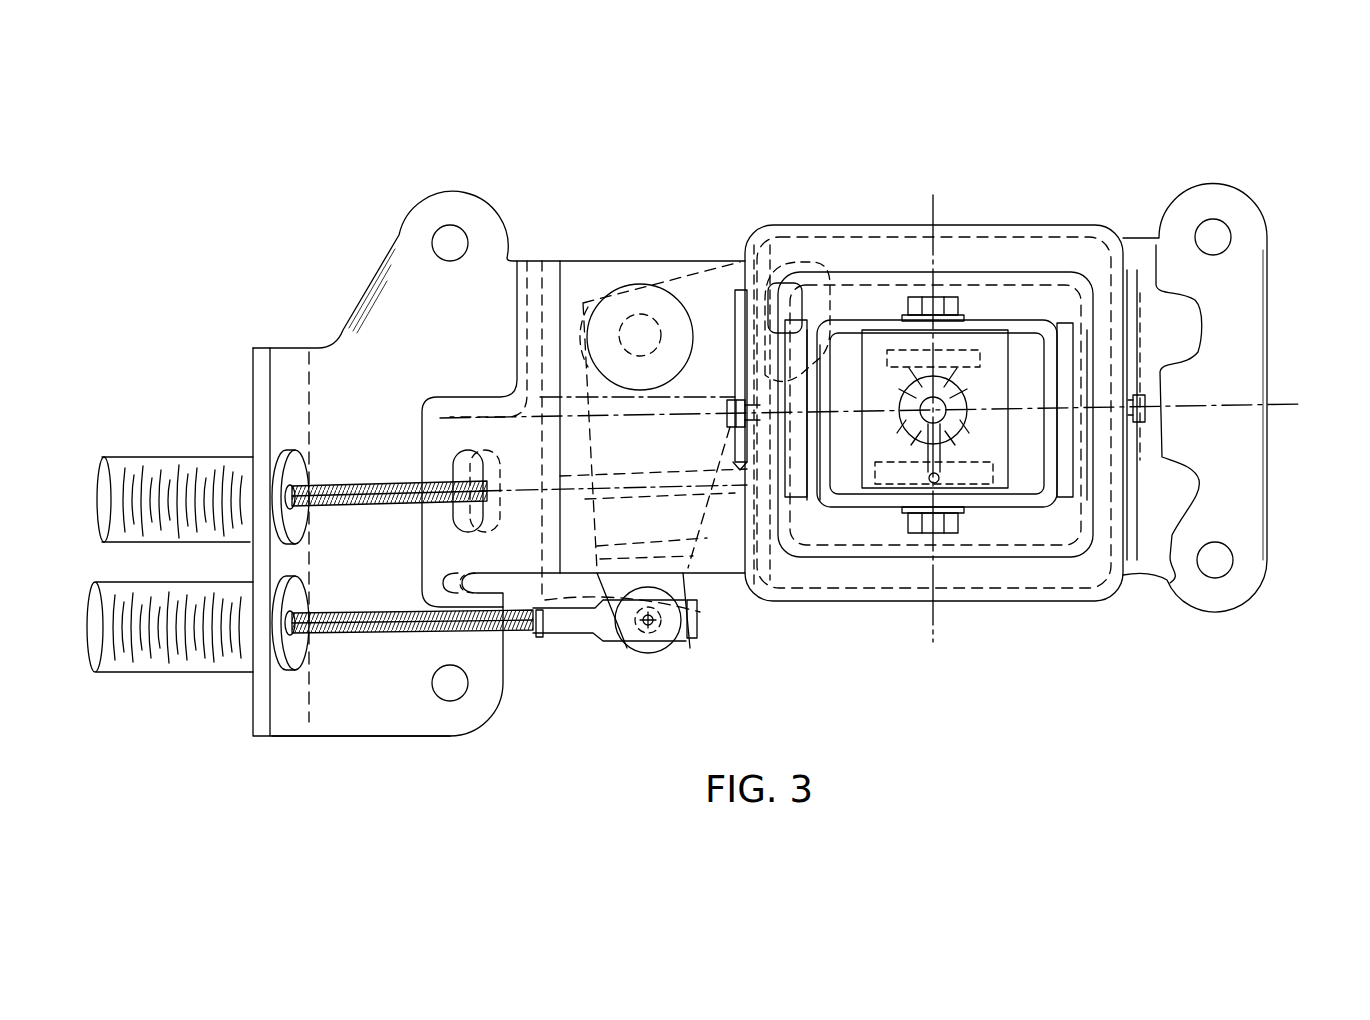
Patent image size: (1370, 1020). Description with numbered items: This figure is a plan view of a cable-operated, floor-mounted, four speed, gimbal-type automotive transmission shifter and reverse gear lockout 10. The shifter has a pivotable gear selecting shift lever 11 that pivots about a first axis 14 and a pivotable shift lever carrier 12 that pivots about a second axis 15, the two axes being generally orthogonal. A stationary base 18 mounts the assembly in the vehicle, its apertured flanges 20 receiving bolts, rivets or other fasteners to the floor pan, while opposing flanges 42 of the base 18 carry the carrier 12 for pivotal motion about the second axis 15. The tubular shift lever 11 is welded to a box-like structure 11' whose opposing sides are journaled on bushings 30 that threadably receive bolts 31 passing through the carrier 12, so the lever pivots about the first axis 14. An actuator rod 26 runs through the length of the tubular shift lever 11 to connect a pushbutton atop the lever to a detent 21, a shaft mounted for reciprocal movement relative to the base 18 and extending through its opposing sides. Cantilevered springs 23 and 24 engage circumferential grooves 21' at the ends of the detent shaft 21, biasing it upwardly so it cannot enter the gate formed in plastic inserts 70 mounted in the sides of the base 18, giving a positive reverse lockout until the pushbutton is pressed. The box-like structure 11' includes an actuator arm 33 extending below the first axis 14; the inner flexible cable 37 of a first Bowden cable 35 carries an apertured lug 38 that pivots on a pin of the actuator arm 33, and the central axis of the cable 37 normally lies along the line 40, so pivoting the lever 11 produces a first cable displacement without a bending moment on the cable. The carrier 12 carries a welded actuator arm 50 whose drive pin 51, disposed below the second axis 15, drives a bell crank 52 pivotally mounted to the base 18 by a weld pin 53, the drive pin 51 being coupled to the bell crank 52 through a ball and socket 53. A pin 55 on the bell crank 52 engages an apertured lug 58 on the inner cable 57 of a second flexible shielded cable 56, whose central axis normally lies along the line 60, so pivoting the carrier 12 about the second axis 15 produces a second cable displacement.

The transmission shifter and reverse gear lockout 10 is at (1092, 104).
The shift lever 11 is at (924, 491).
The box-like structure 11' is at (941, 417).
The shift lever carrier 12 is at (983, 323).
The first axis 14 is at (940, 612).
The second axis 15 is at (1267, 405).
The stationary base 18 is at (416, 372).
The apertured flanges 20 is at (468, 208).
The detent 21 is at (979, 318).
The circumferential grooves 21' is at (951, 338).
The cantilevered spring 23 is at (745, 258).
The cantilevered spring 24 is at (1173, 460).
The actuator rod 26 is at (905, 385).
The bushings 30 is at (963, 365).
The bolts 31 is at (957, 293).
The actuator arm 33 is at (860, 500).
The first flexible shielded cable 35 is at (128, 478).
The inner flexible cable 37 is at (347, 483).
The apertured lug 38 is at (840, 507).
The line 40 is at (538, 470).
The opposing flanges 42 is at (740, 293).
The actuator arm 50 is at (820, 320).
The drive pin 51 is at (790, 300).
The bell crank 52 is at (772, 300).
The weld pin 53 is at (748, 338).
The pin 55 is at (650, 643).
The second flexible shielded cable 56 is at (138, 667).
The inner cable 57 is at (373, 637).
The apertured lug 58 is at (573, 636).
The line 60 is at (540, 640).
The plastic inserts 70 is at (743, 433).